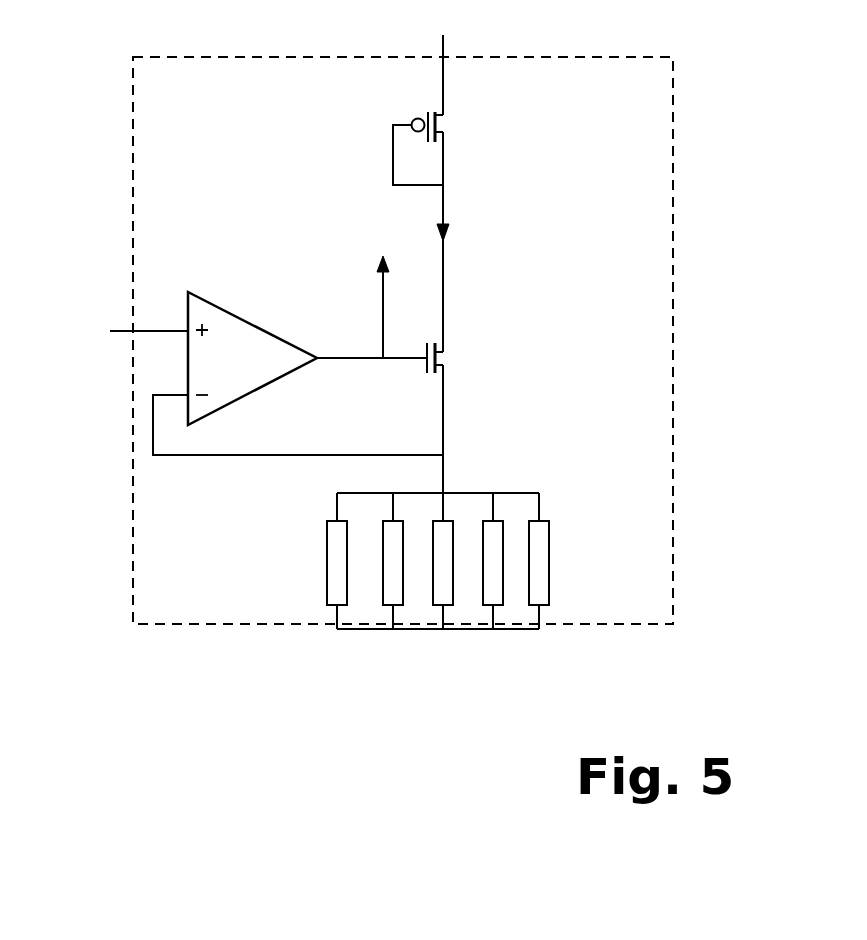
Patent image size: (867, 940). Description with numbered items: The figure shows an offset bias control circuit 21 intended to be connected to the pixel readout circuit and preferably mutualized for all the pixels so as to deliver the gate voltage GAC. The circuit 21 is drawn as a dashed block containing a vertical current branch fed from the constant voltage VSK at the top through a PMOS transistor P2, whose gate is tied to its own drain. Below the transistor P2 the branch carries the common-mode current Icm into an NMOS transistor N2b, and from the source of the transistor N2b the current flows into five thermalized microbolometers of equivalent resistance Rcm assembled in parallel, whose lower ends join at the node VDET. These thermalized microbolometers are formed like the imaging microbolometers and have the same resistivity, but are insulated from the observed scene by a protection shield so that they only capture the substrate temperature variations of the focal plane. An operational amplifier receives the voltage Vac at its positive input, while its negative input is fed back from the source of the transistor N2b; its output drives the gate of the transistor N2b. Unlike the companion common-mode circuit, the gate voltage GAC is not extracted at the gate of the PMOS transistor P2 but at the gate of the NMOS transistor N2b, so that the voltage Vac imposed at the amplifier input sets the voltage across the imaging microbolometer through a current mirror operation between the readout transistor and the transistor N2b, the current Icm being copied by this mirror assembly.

The circuit 21 is at (207, 627).
The constant voltage VSK is at (444, 57).
The PMOS transistor P2 is at (443, 148).
The current Icm is at (468, 242).
The NMOS transistor N2b is at (474, 418).
The voltage Vac is at (122, 334).
The gate voltage GAC is at (378, 293).
The equivalent resistance Rcm is at (468, 561).
The detection voltage VDET is at (448, 647).